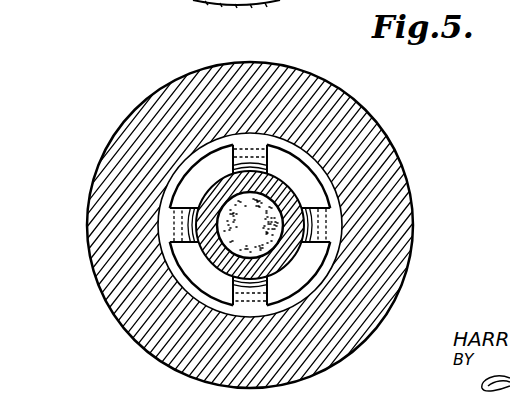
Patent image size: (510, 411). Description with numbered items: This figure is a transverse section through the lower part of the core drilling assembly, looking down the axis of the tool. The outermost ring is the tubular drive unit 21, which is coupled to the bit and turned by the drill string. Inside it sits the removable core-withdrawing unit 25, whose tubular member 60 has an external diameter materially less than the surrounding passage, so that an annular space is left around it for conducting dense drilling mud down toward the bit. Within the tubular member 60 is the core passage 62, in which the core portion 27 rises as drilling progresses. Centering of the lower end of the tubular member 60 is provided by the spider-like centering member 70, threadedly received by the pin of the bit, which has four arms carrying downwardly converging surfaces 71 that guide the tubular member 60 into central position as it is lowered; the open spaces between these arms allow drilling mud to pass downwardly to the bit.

The tubular drive unit 21 is at (331, 77).
The core-withdrawing unit 25 is at (300, 172).
The core portion 27 is at (239, 222).
The tubular member 60 is at (205, 274).
The core passage 62 is at (228, 241).
The spider-like centering member 70 is at (168, 188).
The downwardly converging surfaces 71 is at (250, 140).